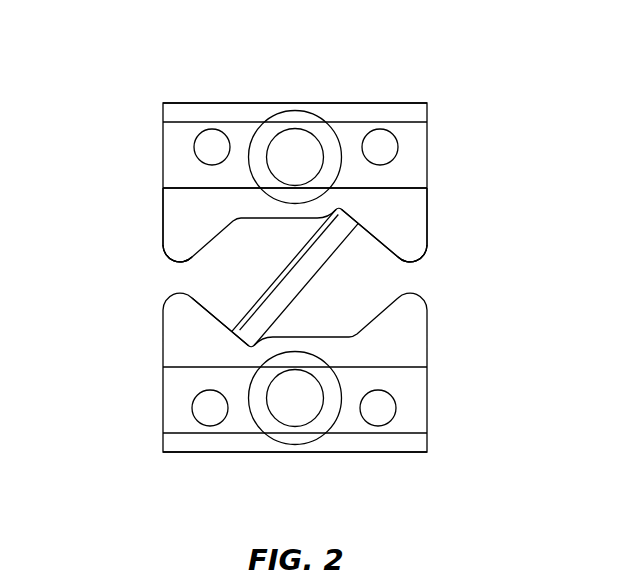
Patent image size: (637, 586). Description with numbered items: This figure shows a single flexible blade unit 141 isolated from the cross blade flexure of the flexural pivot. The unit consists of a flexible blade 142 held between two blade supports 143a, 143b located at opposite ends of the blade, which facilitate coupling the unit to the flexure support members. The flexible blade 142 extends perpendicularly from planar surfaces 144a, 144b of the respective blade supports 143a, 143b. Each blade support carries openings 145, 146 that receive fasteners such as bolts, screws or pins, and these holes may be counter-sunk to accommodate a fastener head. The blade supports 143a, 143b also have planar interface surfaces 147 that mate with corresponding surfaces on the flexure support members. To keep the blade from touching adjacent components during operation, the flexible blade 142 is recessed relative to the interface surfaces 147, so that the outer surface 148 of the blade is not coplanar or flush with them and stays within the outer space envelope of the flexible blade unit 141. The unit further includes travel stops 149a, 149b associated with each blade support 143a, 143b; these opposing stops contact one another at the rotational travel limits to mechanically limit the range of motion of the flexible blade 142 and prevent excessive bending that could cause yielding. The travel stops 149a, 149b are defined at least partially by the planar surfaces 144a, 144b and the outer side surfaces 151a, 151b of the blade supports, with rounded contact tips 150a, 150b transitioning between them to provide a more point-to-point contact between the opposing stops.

The flexible blade unit 141 is at (258, 52).
The flexible blade 142 is at (307, 278).
The blade support 143a is at (355, 103).
The blade support 143b is at (347, 453).
The planar surface 144a is at (373, 237).
The planar surface 144b is at (212, 307).
The opening 145 is at (290, 146).
The opening 146 is at (390, 140).
The interface surface 147 is at (188, 213).
The outer surface 148 is at (292, 281).
The travel stop 149a is at (440, 253).
The travel stop 149b is at (150, 257).
The rounded contact tip 150a is at (410, 262).
The rounded contact tip 150b is at (177, 262).
The outer side surface 151a is at (428, 208).
The outer side surface 151b is at (163, 225).